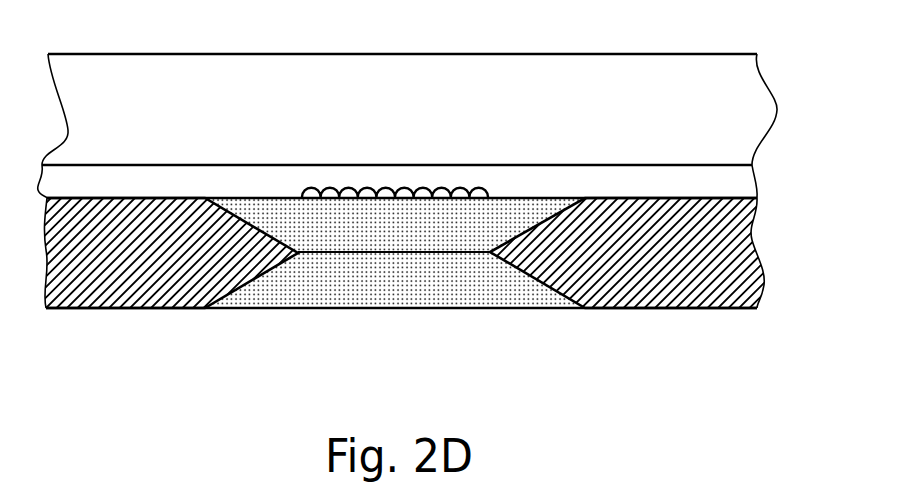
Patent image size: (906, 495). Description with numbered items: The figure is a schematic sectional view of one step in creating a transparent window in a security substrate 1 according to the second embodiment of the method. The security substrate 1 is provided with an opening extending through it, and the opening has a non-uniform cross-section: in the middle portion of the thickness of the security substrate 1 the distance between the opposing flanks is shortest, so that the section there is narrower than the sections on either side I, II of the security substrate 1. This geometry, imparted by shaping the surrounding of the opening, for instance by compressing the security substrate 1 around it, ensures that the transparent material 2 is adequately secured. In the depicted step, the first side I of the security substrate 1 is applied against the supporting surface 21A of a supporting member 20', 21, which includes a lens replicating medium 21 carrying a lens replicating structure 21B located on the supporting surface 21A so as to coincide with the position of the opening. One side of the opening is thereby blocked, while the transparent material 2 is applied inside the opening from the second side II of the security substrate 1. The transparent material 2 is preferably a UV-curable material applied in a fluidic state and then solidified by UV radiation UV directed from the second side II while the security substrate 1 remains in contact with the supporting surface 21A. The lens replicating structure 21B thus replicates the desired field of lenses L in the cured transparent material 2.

The supporting member 20' is at (409, 109).
The lens replicating medium 21 is at (662, 172).
The supporting surface 21A is at (264, 205).
The lens replicating structure 21B is at (363, 189).
The field of lenses L is at (414, 190).
The security substrate 1 is at (93, 295).
The transparent material 2 is at (490, 295).
The UV radiation UV is at (403, 313).
The first side I is at (782, 168).
The second side II is at (401, 334).